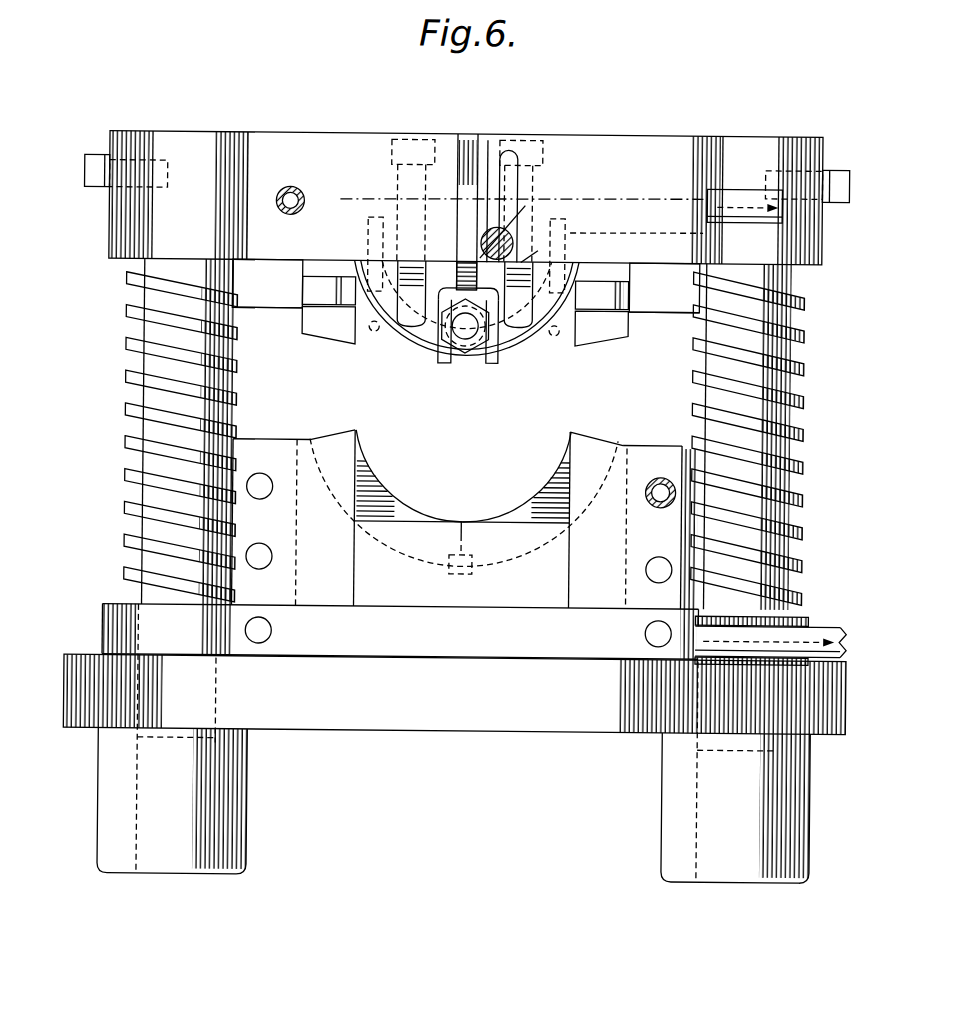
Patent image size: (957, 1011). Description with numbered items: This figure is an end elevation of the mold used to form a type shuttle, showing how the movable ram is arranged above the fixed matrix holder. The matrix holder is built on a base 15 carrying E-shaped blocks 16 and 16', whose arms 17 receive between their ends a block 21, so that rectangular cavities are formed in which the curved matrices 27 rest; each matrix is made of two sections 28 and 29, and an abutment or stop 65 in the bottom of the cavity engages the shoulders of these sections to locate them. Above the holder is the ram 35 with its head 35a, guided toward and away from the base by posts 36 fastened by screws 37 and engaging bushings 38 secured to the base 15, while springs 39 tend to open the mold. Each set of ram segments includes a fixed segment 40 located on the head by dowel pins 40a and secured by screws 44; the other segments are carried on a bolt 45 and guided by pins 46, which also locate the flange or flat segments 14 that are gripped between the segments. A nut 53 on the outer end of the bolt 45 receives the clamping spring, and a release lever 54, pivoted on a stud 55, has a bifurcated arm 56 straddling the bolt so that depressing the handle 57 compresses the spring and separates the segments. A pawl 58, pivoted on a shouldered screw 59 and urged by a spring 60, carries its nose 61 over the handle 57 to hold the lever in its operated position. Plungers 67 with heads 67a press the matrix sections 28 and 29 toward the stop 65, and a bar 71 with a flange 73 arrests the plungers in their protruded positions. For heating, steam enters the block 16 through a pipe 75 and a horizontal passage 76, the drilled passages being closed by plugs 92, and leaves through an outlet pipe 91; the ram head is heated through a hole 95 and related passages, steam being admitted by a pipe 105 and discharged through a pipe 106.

The flange or flat segment 14 is at (380, 358).
The base 15 is at (318, 722).
The E-shaped block 16 is at (625, 511).
The E-shaped block 16' is at (294, 504).
The arm 17 is at (345, 580).
The block 21 is at (487, 612).
The curved matrix 27 is at (465, 495).
The matrix section 28 is at (392, 496).
The matrix section 29 is at (530, 498).
The ram 35 is at (340, 117).
The ram head 35a is at (622, 150).
The post 36 is at (148, 367).
The screw 37 is at (100, 160).
The bushing 38 is at (112, 791).
The spring 39 is at (132, 412).
The ram segment 40 is at (412, 383).
The dowel pin 40a is at (368, 238).
The screw 44 is at (405, 180).
The bolt 45 is at (472, 326).
The pin 46 is at (370, 331).
The nut 53 is at (462, 358).
The lever 54 is at (440, 216).
The stud 55 is at (634, 197).
The arm 56 is at (448, 300).
The handle 57 is at (457, 260).
The pawl 58 is at (512, 168).
The shouldered screw 59 is at (497, 260).
The spring 60 is at (520, 225).
The nose 61 is at (483, 178).
The abutment or stop 65 is at (455, 573).
The plunger 67 is at (300, 292).
The plunger head 67a is at (305, 325).
The bar 71 is at (283, 308).
The flange 73 is at (312, 270).
The pipe 75 is at (659, 503).
The horizontal passage 76 is at (659, 487).
The outlet pipe 91 is at (826, 632).
The plug 92 is at (262, 501).
The hole 95 is at (283, 198).
The pipe 105 is at (292, 188).
The pipe 106 is at (737, 185).